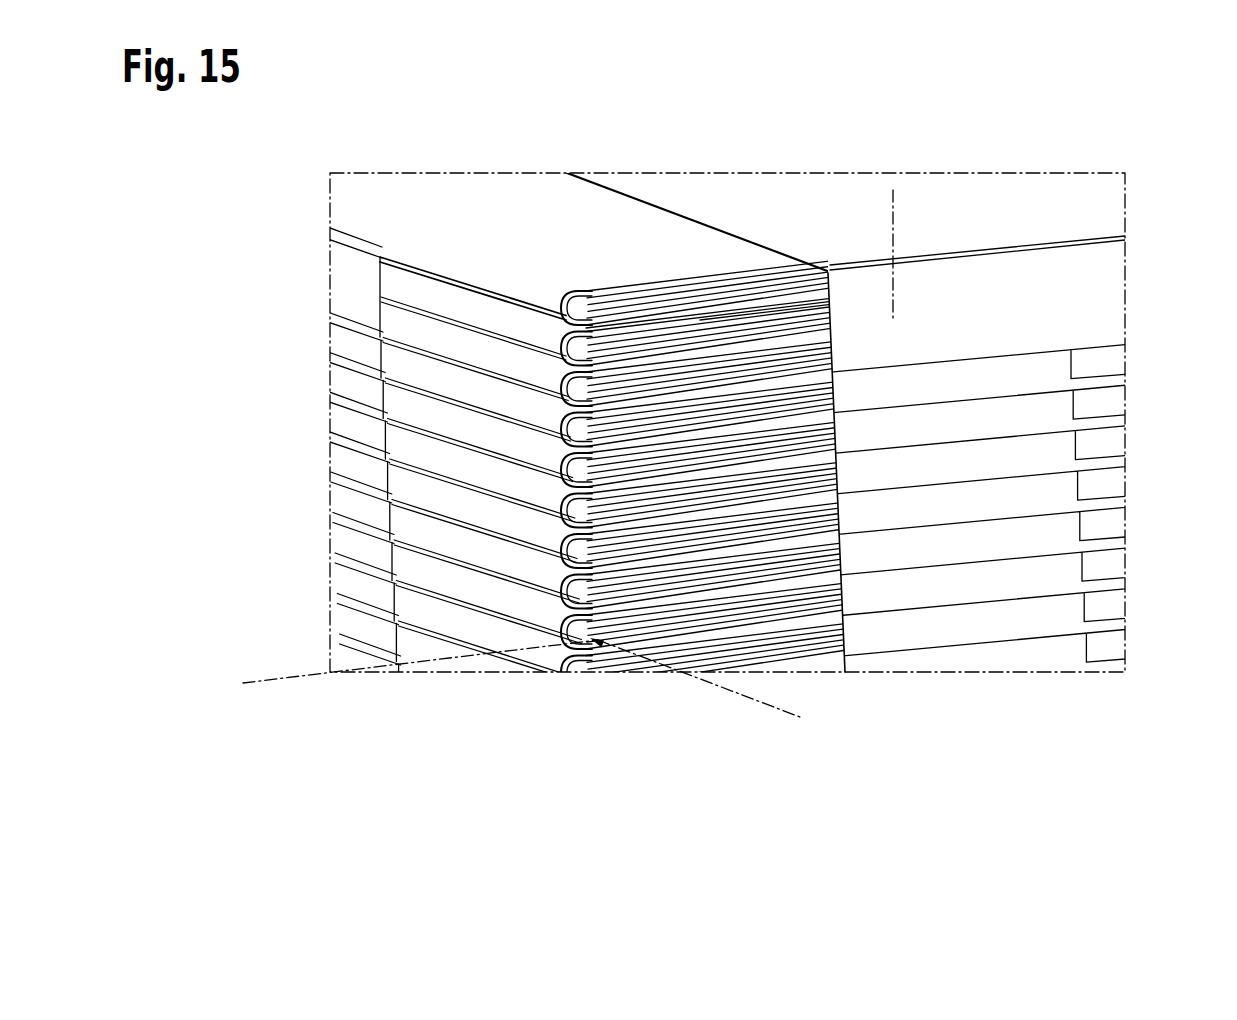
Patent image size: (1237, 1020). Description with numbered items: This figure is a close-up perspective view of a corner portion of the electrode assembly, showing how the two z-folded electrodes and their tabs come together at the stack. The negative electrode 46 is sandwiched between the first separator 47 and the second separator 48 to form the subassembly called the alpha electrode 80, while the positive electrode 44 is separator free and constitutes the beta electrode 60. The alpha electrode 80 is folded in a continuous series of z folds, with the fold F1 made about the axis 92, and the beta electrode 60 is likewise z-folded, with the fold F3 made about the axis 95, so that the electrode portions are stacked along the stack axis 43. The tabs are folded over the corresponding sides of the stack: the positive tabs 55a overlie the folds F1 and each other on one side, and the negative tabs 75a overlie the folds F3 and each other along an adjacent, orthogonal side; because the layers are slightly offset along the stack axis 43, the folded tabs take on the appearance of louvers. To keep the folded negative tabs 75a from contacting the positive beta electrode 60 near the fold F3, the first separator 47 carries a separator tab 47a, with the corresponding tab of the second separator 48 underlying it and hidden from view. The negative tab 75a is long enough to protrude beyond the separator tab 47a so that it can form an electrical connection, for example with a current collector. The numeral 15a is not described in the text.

The plate edge 15a is at (1110, 405).
The stack axis 43 is at (895, 221).
The positive electrode 44 is at (713, 391).
The negative electrode 46 is at (705, 249).
The first separator 47 is at (705, 213).
The separator tab 47a is at (1167, 507).
The second separator 48 is at (705, 229).
The positive tab 55a is at (340, 388).
The beta electrode 60 is at (708, 229).
The negative tab 75a is at (1167, 473).
The alpha electrode 80 is at (410, 483).
The axis 92 is at (759, 704).
The axis 95 is at (365, 676).
The fold F1 is at (417, 612).
The fold F3 is at (632, 597).